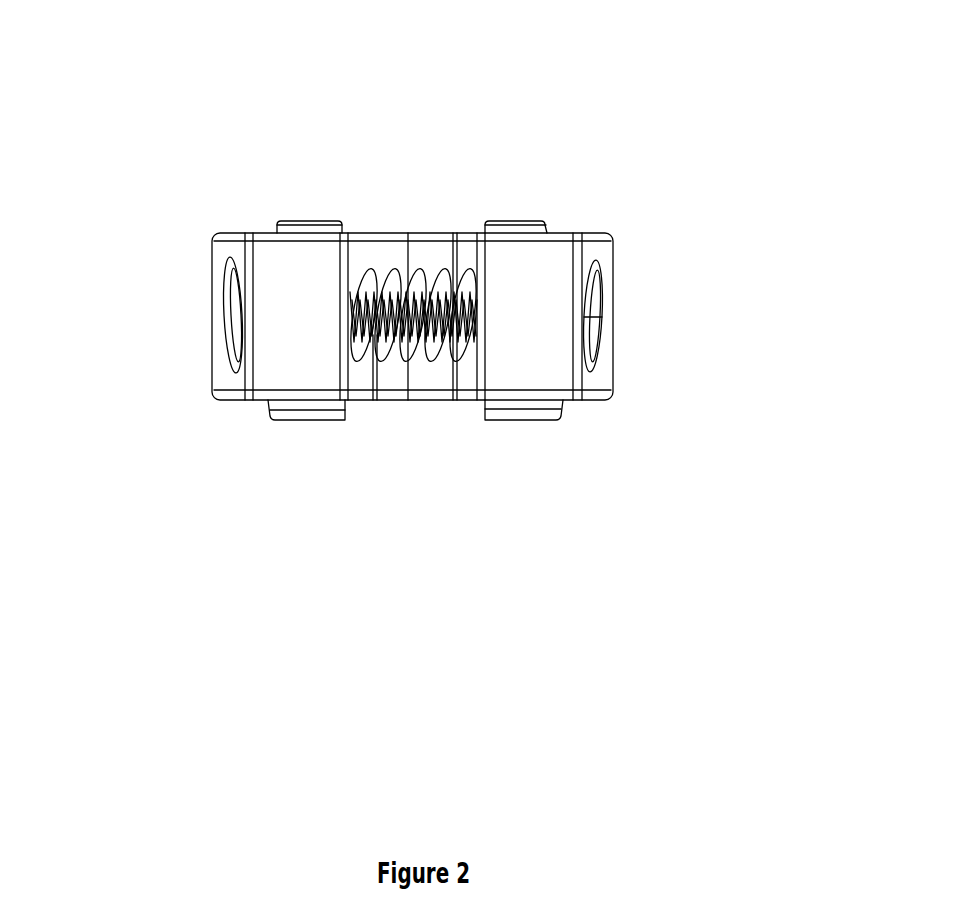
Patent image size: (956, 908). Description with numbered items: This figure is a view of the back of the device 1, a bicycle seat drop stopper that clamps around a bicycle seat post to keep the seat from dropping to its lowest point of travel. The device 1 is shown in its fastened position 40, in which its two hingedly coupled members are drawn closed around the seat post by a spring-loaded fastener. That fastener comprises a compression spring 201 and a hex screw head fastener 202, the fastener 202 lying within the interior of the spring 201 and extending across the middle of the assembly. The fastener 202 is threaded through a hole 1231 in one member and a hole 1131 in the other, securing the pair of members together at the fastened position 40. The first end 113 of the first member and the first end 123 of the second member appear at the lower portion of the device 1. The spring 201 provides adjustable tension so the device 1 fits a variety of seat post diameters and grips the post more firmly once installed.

The device 1 is at (733, 98).
The fastened position 40 is at (736, 185).
The hole 1231 is at (181, 319).
The hole 1131 is at (644, 319).
The first end 123 is at (294, 461).
The first end 113 is at (539, 462).
The compression spring 201 is at (432, 386).
The hex screw head fastener 202 is at (408, 278).